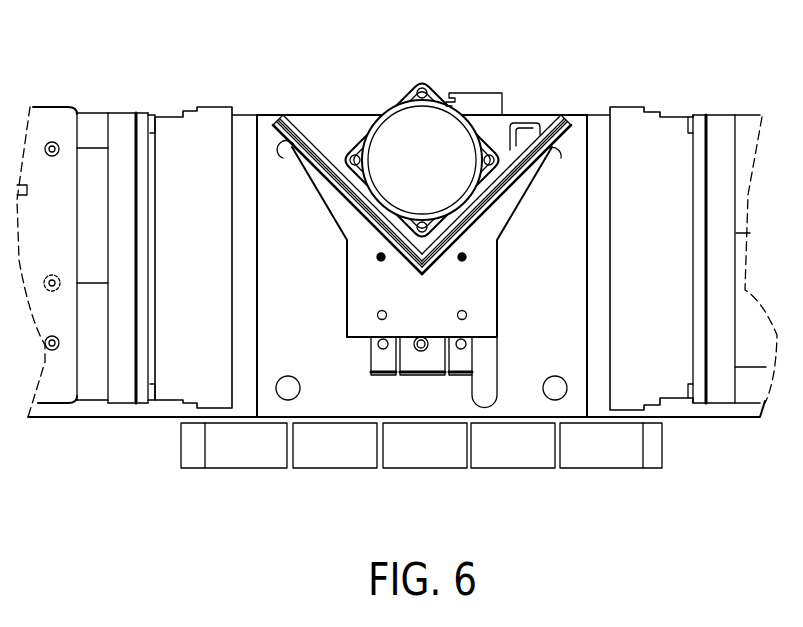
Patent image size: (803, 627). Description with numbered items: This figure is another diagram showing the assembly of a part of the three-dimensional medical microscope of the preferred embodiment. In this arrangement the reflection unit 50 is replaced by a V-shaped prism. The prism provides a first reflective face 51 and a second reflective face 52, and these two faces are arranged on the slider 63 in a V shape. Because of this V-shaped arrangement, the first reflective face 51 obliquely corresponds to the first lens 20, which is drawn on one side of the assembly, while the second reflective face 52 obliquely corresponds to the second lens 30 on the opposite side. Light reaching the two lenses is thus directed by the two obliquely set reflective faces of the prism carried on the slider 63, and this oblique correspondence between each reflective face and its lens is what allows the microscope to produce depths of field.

The first lens 20 is at (120, 173).
The second lens 30 is at (675, 155).
The reflection unit 50 is at (429, 143).
The first reflective face 51 is at (318, 170).
The second reflective face 52 is at (514, 173).
The slider 63 is at (477, 313).